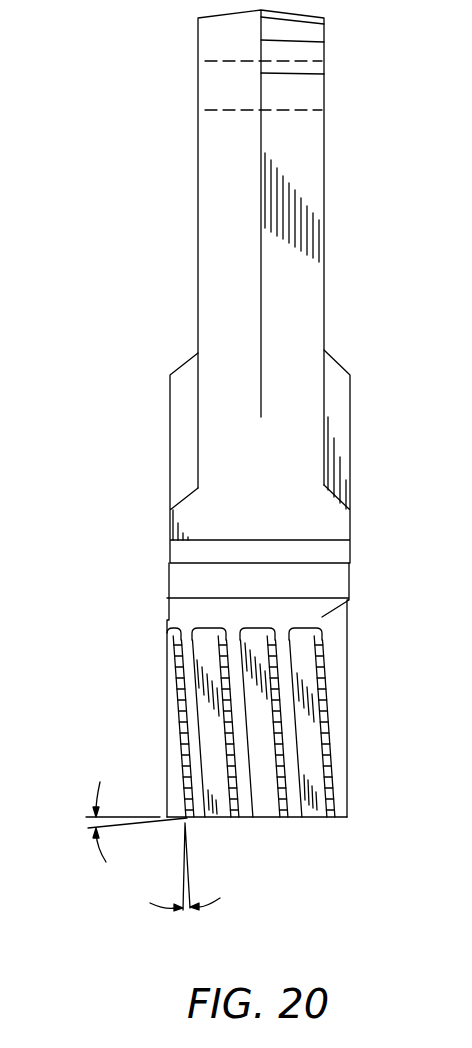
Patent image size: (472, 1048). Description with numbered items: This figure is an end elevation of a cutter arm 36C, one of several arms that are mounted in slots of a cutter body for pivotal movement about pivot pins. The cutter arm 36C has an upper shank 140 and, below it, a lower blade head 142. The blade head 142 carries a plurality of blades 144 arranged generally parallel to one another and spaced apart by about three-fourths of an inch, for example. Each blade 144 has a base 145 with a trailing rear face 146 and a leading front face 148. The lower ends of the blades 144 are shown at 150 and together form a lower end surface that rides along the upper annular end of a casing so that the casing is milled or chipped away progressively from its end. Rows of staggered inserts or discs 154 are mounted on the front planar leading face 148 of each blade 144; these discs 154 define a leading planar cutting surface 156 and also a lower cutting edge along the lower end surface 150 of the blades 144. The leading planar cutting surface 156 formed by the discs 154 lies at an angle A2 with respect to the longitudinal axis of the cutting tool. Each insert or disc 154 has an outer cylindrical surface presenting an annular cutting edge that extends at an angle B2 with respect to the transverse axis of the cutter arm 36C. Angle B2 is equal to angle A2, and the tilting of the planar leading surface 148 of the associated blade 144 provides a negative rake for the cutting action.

The upper shank 140 is at (210, 271).
The cutter arm 36C is at (180, 333).
The lower blade head 142 is at (158, 619).
The leading planar cutting surface 156 is at (219, 641).
The leading front face 148 is at (178, 672).
The inserts or discs 154 is at (180, 740).
The base 145 is at (190, 700).
The blades 144 is at (347, 755).
The trailing rear face 146 is at (185, 770).
The lower ends of blades 150 is at (338, 819).
The angle B2 is at (86, 823).
The angle A2 is at (187, 923).